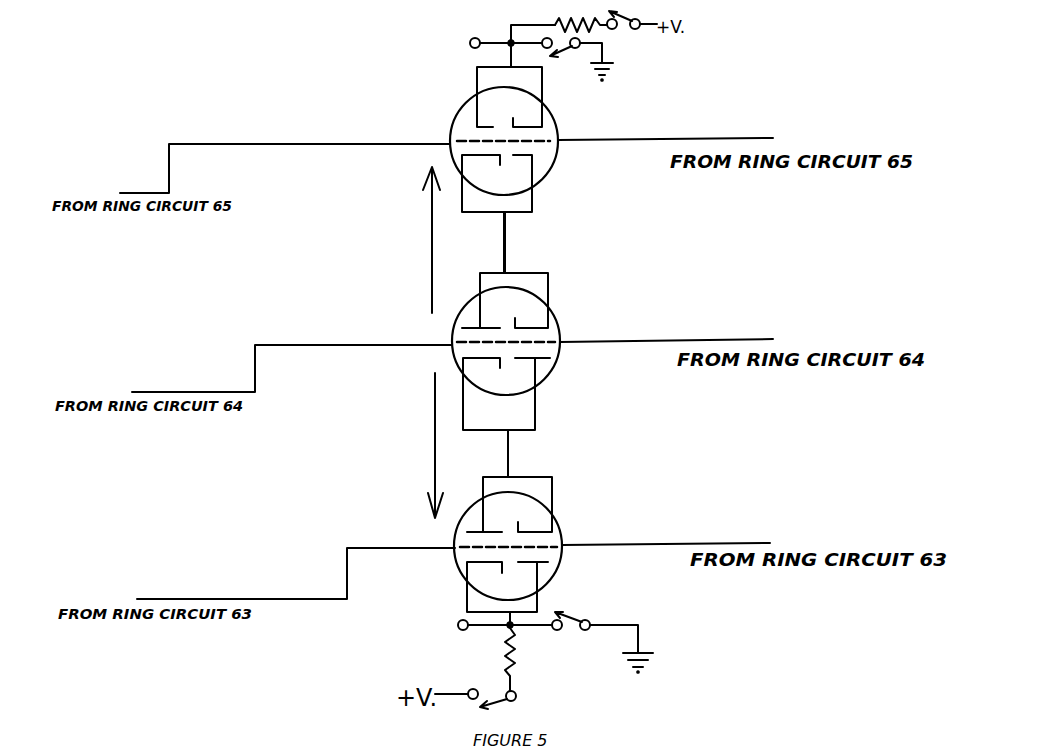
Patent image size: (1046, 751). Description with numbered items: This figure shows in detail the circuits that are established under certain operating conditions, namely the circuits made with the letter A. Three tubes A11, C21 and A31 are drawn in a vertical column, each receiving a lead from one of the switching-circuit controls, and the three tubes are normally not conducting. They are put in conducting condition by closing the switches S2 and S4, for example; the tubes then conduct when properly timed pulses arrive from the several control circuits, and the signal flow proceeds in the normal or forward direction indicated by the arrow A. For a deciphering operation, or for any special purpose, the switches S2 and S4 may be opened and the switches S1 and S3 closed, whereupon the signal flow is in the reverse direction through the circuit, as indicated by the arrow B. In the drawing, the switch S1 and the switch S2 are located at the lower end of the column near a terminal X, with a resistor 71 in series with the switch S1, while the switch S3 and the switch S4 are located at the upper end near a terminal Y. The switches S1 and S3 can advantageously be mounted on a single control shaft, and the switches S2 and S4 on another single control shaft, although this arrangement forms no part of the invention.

The tube A31 is at (560, 136).
The tube C21 is at (562, 323).
The tube A11 is at (562, 523).
The switch S1 is at (487, 712).
The switch S2 is at (602, 630).
The switch S3 is at (577, 62).
The switch S4 is at (635, 40).
The resistor 71 is at (507, 660).
The terminal X is at (494, 629).
The terminal Y is at (495, 35).
The arrow A is at (421, 240).
The arrow B is at (427, 445).